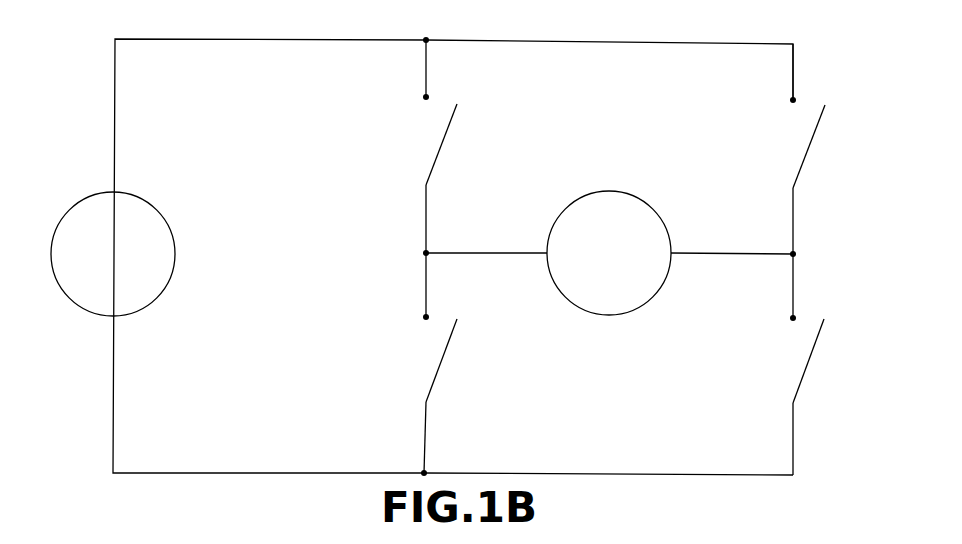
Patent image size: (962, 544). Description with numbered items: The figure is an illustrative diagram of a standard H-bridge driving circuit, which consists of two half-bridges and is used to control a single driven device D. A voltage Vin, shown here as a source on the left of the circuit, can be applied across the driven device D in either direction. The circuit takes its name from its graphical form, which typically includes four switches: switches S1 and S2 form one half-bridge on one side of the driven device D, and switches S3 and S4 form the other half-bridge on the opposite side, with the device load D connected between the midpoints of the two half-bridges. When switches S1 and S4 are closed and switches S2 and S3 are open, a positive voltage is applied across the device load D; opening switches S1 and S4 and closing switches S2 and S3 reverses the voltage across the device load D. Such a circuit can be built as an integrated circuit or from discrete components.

The voltage Vin is at (197, 162).
The switch S1 is at (423, 146).
The switch S2 is at (422, 363).
The switch S3 is at (790, 149).
The switch S4 is at (788, 364).
The driven device D is at (609, 253).